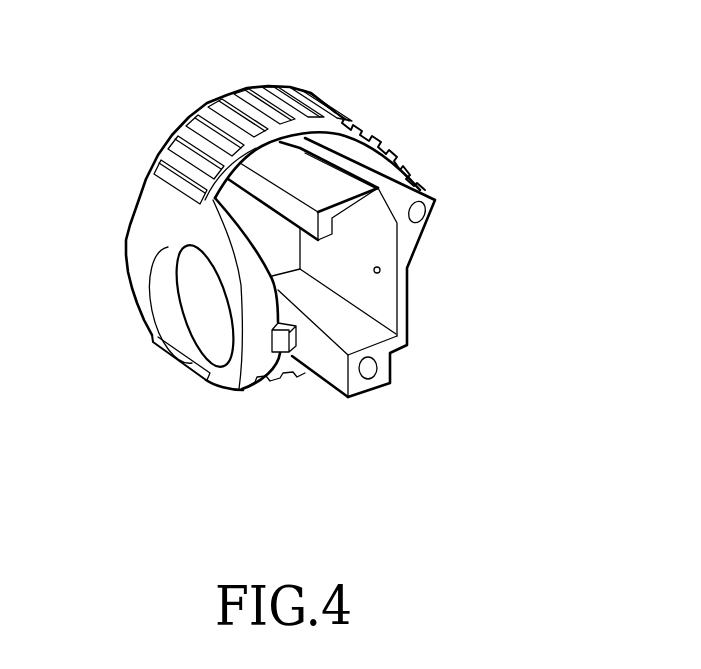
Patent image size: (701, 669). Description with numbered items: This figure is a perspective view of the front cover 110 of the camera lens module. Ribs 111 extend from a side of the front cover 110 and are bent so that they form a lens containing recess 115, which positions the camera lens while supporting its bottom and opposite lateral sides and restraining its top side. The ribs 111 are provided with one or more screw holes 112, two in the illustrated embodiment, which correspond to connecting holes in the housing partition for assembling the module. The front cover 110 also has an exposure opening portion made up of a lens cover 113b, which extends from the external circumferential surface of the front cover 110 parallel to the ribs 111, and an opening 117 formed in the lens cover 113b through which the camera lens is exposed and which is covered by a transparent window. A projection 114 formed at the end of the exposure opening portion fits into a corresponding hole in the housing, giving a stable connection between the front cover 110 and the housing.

The front cover 110 is at (115, 83).
The ribs 111 is at (338, 176).
The screw holes 112 is at (417, 212).
The lens cover 113b is at (236, 366).
The projection 114 is at (281, 353).
The lens containing recess 115 is at (380, 271).
The opening 117 is at (198, 300).